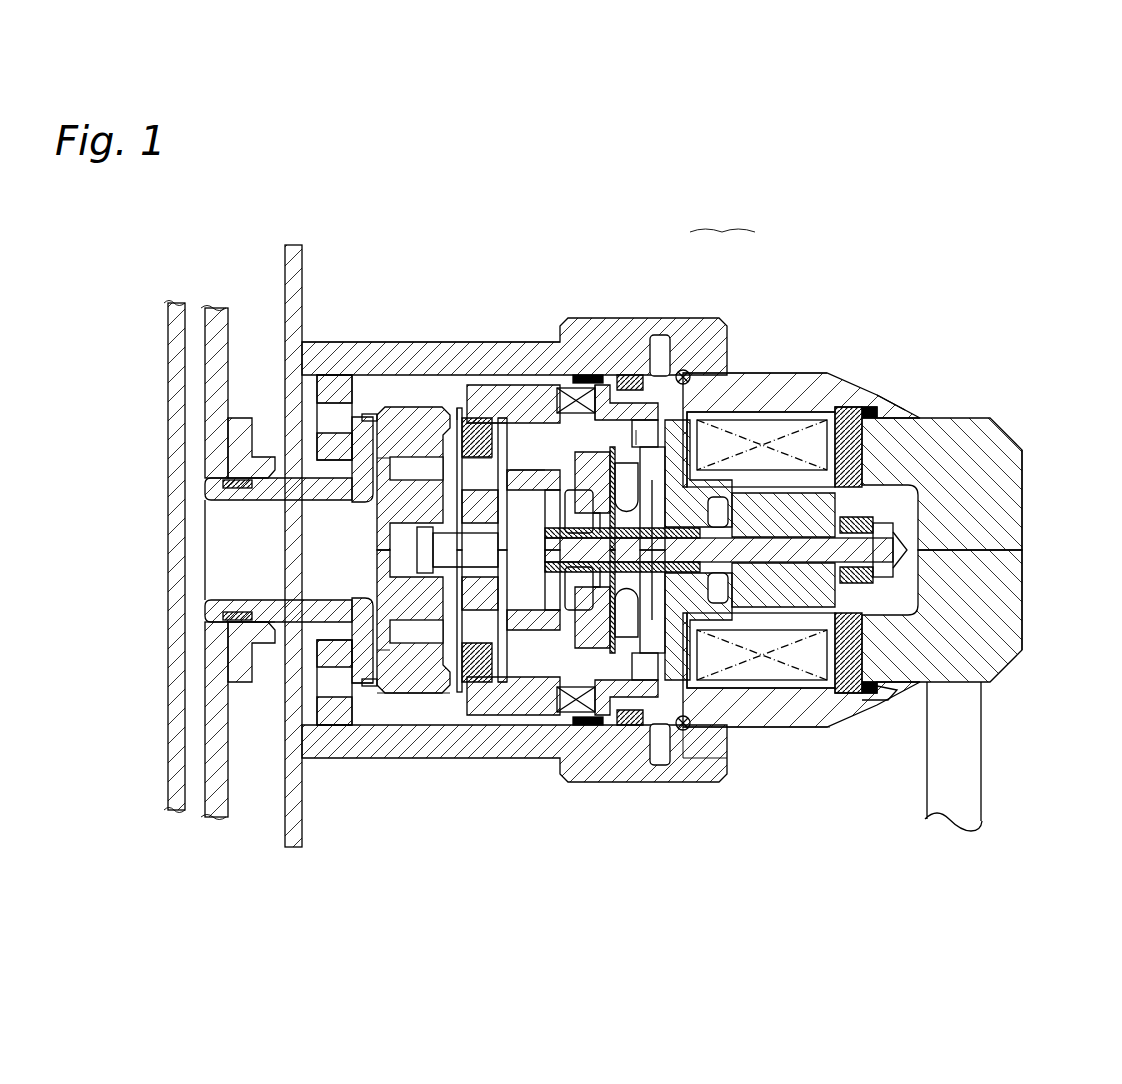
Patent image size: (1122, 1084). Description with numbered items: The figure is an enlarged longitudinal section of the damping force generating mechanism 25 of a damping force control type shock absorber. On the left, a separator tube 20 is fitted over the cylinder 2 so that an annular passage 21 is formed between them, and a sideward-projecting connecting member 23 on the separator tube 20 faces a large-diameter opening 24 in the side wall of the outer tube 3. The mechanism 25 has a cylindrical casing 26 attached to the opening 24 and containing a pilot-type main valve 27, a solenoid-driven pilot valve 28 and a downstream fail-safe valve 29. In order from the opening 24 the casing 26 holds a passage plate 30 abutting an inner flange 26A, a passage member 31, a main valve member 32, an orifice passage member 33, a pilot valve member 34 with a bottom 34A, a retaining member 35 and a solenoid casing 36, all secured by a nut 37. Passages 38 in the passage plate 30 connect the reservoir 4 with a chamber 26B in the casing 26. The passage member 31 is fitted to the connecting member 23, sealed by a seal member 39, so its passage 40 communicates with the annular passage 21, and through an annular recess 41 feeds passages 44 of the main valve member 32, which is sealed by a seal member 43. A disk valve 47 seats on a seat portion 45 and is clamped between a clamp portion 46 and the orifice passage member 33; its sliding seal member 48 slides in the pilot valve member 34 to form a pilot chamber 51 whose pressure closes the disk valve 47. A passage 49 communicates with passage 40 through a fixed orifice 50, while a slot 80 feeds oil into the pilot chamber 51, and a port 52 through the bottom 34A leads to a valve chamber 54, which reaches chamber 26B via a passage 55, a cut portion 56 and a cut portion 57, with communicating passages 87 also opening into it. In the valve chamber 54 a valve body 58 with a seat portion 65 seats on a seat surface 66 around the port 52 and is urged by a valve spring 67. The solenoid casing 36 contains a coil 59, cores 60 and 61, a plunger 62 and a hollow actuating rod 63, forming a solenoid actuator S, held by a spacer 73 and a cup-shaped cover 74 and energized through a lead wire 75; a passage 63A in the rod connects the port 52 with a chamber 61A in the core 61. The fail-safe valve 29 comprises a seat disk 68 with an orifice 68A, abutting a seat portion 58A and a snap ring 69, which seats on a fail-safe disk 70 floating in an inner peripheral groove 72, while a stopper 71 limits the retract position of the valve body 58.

The cylinder 2 is at (176, 395).
The outer tube 3 is at (300, 262).
The reservoir 4 is at (248, 790).
The separator tube 20 is at (216, 325).
The annular passage 21 is at (240, 440).
The connecting member 23 is at (232, 484).
The opening 24 is at (322, 395).
The damping force generating mechanism 25 is at (773, 281).
The casing 26 is at (365, 440).
The inner flange 26A is at (305, 700).
The chamber 26B is at (385, 693).
The main valve 27 is at (458, 410).
The pilot valve 28 is at (503, 420).
The fail-safe valve 29 is at (722, 213).
The passage plate 30 is at (332, 735).
The passage member 31 is at (345, 728).
The main valve member 32 is at (400, 700).
The orifice passage member 33 is at (503, 684).
The pilot valve member 34 is at (560, 715).
The bottom 34A is at (585, 712).
The retaining member 35 is at (690, 762).
The solenoid casing 36 is at (802, 732).
The nut 37 is at (726, 772).
The passages 38 is at (340, 405).
The seal member 39 is at (232, 624).
The passage 40 is at (232, 580).
The annular recess 41 is at (395, 695).
The seal member 43 is at (385, 458).
The passages 44 is at (470, 612).
The seat portion 45 is at (478, 684).
The clamp portion 46 is at (460, 694).
The disk valve 47 is at (448, 410).
The sliding seal member 48 is at (475, 455).
The passage 49 is at (490, 423).
The fixed orifice 50 is at (420, 548).
The pilot chamber 51 is at (500, 690).
The port 52 is at (530, 634).
The valve chamber 54 is at (660, 600).
The passage 55 is at (692, 372).
The cut portion 56 is at (640, 402).
The cut portion 57 is at (586, 378).
The valve body 58 is at (578, 390).
The seat portion 58A is at (630, 380).
The coil 59 is at (805, 378).
The core 60 is at (785, 495).
The core 61 is at (905, 440).
The chamber 61A is at (894, 530).
The plunger 62 is at (835, 715).
The actuating rod 63 is at (848, 410).
The passage 63A is at (866, 548).
The seat portion 65 is at (578, 580).
The seat surface 66 is at (535, 470).
The valve spring 67 is at (600, 410).
The seat disk 68 is at (662, 372).
The orifice 68A is at (641, 430).
The snap ring 69 is at (706, 748).
The fail-safe disk 70 is at (662, 345).
The stopper 71 is at (742, 495).
The inner peripheral groove 72 is at (648, 652).
The spacer 73 is at (872, 700).
The cover 74 is at (1017, 600).
The lead wire 75 is at (952, 765).
The slot 80 is at (432, 568).
The communicating passages 87 is at (548, 565).
The solenoid actuator S is at (853, 380).